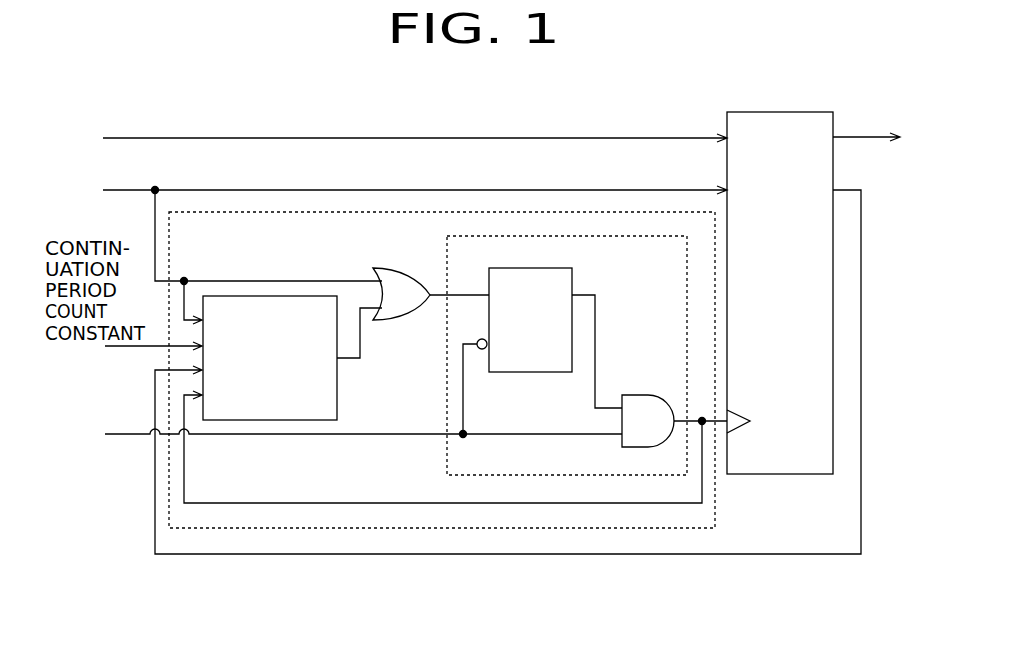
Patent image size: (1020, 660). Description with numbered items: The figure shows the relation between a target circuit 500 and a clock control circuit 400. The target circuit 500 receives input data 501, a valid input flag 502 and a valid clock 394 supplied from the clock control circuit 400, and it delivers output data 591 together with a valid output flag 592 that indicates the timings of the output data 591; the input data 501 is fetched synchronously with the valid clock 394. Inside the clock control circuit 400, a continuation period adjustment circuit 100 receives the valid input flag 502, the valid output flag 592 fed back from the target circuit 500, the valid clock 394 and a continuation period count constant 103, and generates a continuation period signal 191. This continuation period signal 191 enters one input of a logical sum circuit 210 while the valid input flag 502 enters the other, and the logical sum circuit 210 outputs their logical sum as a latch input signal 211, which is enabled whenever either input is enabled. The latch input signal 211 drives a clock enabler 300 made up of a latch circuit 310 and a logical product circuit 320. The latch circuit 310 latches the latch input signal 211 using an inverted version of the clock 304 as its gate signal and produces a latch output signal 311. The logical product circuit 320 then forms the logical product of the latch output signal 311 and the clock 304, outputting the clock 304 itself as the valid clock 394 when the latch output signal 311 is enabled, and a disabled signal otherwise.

The continuation period adjustment circuit 100 is at (337, 407).
The continuation period count constant 103 is at (115, 348).
The continuation period signal 191 is at (360, 343).
The logical sum circuit 210 is at (400, 268).
The latch input signal 211 is at (437, 300).
The clock enabler 300 is at (447, 460).
The clock 304 is at (115, 437).
The latch circuit 310 is at (535, 372).
The latch output signal 311 is at (597, 310).
The logical product circuit 320 is at (640, 395).
The valid clock 394 is at (235, 503).
The clock control circuit 400 is at (715, 510).
The target circuit 500 is at (783, 112).
The input data 501 is at (116, 136).
The valid input flag 502 is at (116, 189).
The output data 591 is at (868, 140).
The valid output flag 592 is at (235, 555).